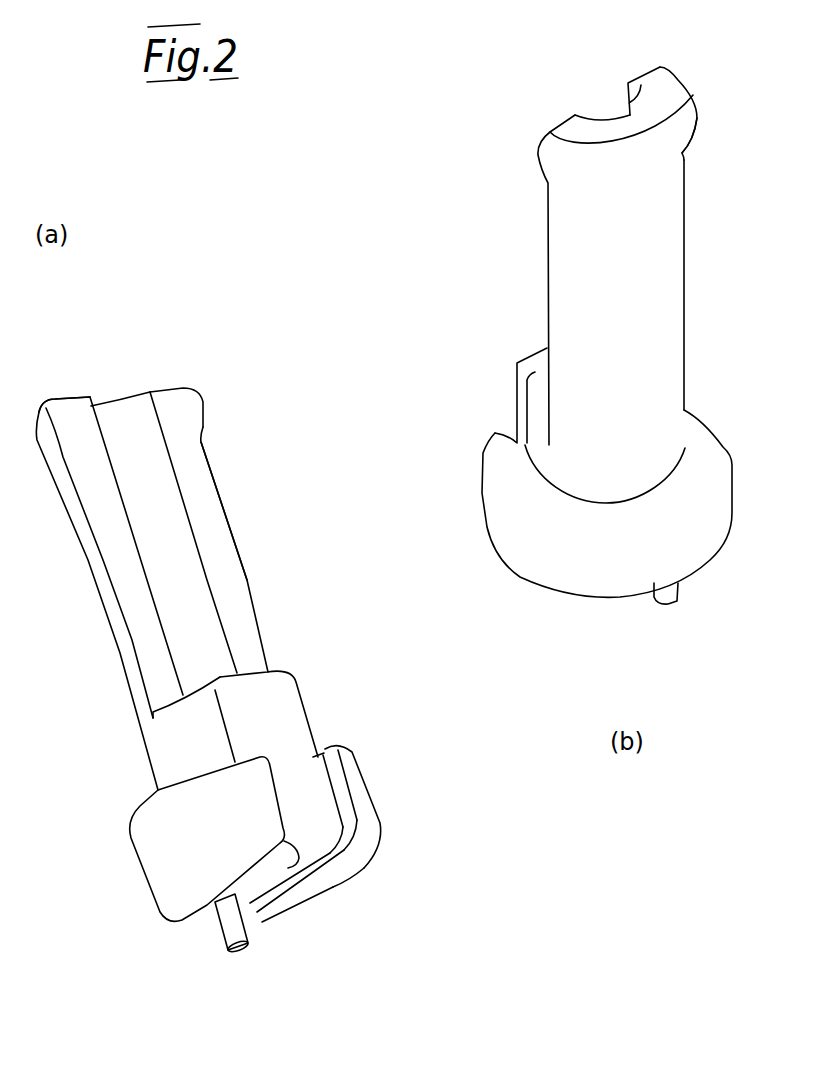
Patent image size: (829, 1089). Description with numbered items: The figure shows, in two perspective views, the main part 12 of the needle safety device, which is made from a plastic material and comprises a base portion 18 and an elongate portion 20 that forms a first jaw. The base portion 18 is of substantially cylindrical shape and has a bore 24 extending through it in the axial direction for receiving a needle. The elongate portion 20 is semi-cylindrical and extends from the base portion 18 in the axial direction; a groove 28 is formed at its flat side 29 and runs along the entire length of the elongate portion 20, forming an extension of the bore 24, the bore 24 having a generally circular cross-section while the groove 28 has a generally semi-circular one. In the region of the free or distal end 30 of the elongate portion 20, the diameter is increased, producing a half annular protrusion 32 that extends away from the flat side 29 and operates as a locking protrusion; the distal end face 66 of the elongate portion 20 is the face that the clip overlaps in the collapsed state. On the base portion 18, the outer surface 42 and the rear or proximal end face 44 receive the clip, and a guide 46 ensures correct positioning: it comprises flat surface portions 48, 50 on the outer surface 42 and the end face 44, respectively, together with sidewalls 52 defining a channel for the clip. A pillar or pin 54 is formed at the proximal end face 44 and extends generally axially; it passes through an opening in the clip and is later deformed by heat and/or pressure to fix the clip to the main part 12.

The main part 12 is at (209, 287).
The base portion 18 is at (137, 875).
The elongate portion 20 is at (97, 592).
The bore 24 is at (280, 863).
The groove 28 is at (141, 416).
The flat side 29 is at (226, 562).
The distal end 30 is at (80, 397).
The half annular protrusion 32 is at (203, 400).
The outer surface 42 is at (175, 753).
The proximal end face 44 is at (210, 913).
The guide 46 is at (317, 823).
The flat surface portion 48 is at (288, 732).
The flat surface portion 50 is at (256, 890).
The sidewalls 52 is at (340, 798).
The pillar or pin 54 is at (240, 948).
The distal end face 66 is at (597, 126).